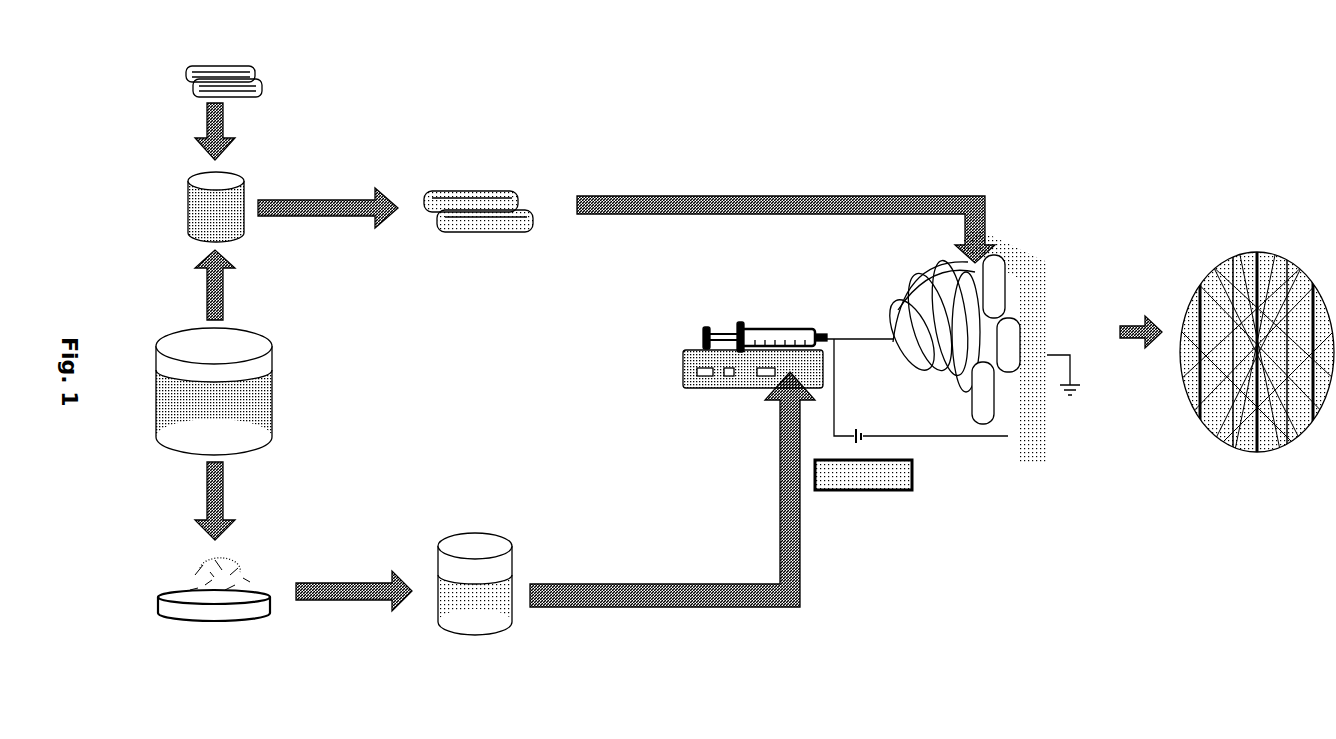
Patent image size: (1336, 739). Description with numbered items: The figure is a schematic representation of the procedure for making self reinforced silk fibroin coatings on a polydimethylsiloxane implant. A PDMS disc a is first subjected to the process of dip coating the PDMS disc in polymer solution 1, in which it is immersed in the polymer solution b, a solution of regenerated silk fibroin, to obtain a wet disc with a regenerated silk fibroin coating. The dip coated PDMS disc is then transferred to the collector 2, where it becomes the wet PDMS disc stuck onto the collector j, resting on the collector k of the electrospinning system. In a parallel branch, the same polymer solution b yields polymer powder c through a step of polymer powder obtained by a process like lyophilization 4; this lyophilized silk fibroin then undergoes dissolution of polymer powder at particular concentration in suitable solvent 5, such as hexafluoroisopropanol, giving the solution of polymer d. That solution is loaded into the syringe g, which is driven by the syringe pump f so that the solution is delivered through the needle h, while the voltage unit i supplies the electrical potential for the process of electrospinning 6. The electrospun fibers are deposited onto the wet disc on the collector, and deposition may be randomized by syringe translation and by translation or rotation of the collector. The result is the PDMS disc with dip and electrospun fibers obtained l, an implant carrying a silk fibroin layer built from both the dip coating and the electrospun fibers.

The PDMS disc a is at (198, 81).
The polymer solution b is at (214, 391).
The polymer powder c is at (214, 619).
The solution of polymer d is at (475, 603).
The syringe pump f is at (697, 350).
The syringe g is at (783, 329).
The needle h is at (837, 339).
The voltage unit i is at (863, 475).
The wet PDMS disc stuck onto the collector j is at (988, 448).
The collector k is at (1040, 296).
The PDMS disc with dip and electrospun fibers obtained l is at (1257, 367).
The process of dip coating the PDMS disc in polymer solution 1 is at (190, 131).
The dip coated PDMS disc transferred to the collector 2 is at (328, 196).
The polymer powder obtained by a process like lyophilization 4 is at (194, 501).
The dissolution of polymer powder at particular concentration in suitable solvent 5 is at (354, 621).
The process of electrospinning 6 is at (868, 527).